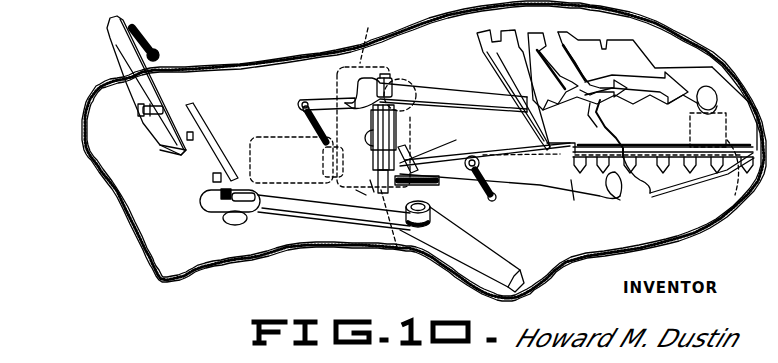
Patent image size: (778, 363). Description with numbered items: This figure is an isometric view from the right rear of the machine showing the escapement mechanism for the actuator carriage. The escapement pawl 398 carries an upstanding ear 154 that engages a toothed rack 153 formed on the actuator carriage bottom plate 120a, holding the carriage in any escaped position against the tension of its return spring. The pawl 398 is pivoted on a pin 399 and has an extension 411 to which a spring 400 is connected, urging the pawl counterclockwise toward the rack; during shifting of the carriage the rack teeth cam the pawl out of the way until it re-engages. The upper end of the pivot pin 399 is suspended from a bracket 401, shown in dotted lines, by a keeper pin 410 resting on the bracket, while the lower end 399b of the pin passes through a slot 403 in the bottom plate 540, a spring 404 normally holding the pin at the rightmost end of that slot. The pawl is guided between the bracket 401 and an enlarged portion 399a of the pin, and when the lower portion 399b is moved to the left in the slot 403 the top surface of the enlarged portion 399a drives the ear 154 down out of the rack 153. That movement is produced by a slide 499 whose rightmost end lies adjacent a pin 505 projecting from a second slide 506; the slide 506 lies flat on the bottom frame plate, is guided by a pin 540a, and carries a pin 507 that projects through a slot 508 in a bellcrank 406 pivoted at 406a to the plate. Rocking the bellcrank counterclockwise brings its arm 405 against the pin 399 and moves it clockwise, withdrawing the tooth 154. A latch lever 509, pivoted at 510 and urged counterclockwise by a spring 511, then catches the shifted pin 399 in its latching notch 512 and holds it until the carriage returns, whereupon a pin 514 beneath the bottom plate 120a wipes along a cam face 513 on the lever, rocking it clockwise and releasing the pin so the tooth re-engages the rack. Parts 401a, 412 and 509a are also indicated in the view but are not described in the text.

The actuator carriage bottom plate 120a is at (703, 82).
The toothed rack 153 is at (617, 80).
The upstanding ear 154 is at (531, 97).
The escapement pawl 398 is at (491, 88).
The pivot pin 399 is at (381, 76).
The enlarged portion 399a is at (394, 114).
The lower end of pivot pin 399b is at (397, 248).
The spring 400 is at (305, 116).
The bracket 401 is at (370, 34).
The housing portion 401a is at (338, 80).
The slot 403 is at (377, 192).
The spring 404 is at (424, 184).
The arm 405 is at (406, 153).
The bellcrank 406 is at (268, 208).
The bellcrank pivot 406a is at (432, 212).
The keeper pin 410 is at (394, 79).
The extension 411 is at (318, 104).
The housing 412 is at (318, 165).
The hook slide 499 is at (118, 45).
The pin 505 is at (138, 110).
The second slide 506 is at (172, 123).
The pin 507 is at (205, 196).
The slot 508 is at (245, 190).
The latch lever 509 is at (577, 183).
The plate edge 509a is at (430, 163).
The latch lever pivot 510 is at (616, 199).
The spring 511 is at (494, 191).
The latching notch 512 is at (367, 188).
The cam face 513 is at (734, 196).
The pin 514 is at (690, 112).
The bottom plate 540 is at (124, 199).
The guide pin 540a is at (213, 177).